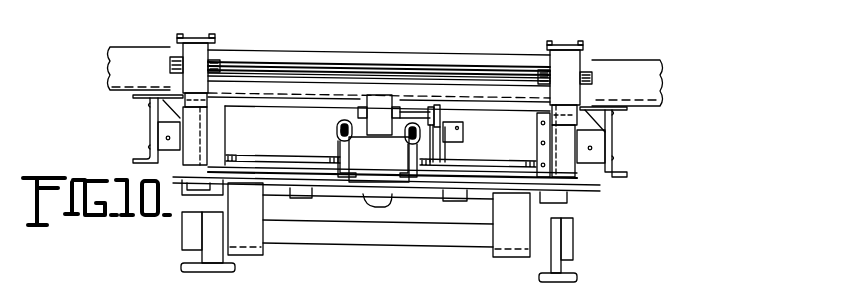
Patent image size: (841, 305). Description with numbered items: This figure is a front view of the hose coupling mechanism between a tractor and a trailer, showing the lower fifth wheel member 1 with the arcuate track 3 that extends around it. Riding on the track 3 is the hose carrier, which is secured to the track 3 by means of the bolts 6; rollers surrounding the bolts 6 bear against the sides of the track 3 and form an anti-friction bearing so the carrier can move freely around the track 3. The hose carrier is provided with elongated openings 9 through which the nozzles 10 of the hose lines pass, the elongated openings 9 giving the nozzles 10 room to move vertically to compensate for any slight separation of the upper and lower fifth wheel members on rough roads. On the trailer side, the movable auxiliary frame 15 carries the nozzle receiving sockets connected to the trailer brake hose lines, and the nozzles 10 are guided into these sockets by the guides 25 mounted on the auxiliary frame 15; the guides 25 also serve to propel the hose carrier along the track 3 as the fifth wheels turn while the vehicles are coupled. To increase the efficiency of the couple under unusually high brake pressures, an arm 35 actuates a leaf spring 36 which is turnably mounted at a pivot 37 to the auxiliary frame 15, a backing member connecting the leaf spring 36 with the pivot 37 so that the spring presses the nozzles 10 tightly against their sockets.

The lower fifth wheel member 1 is at (522, 199).
The arcuate track 3 is at (572, 190).
The bolts 6 is at (403, 172).
The elongated openings 9 is at (338, 128).
The nozzles 10 is at (337, 138).
The movable auxiliary frame 15 is at (646, 64).
The guides 25 is at (243, 155).
The arm 35 is at (443, 151).
The leaf spring 36 is at (381, 100).
The pivot 37 is at (416, 110).